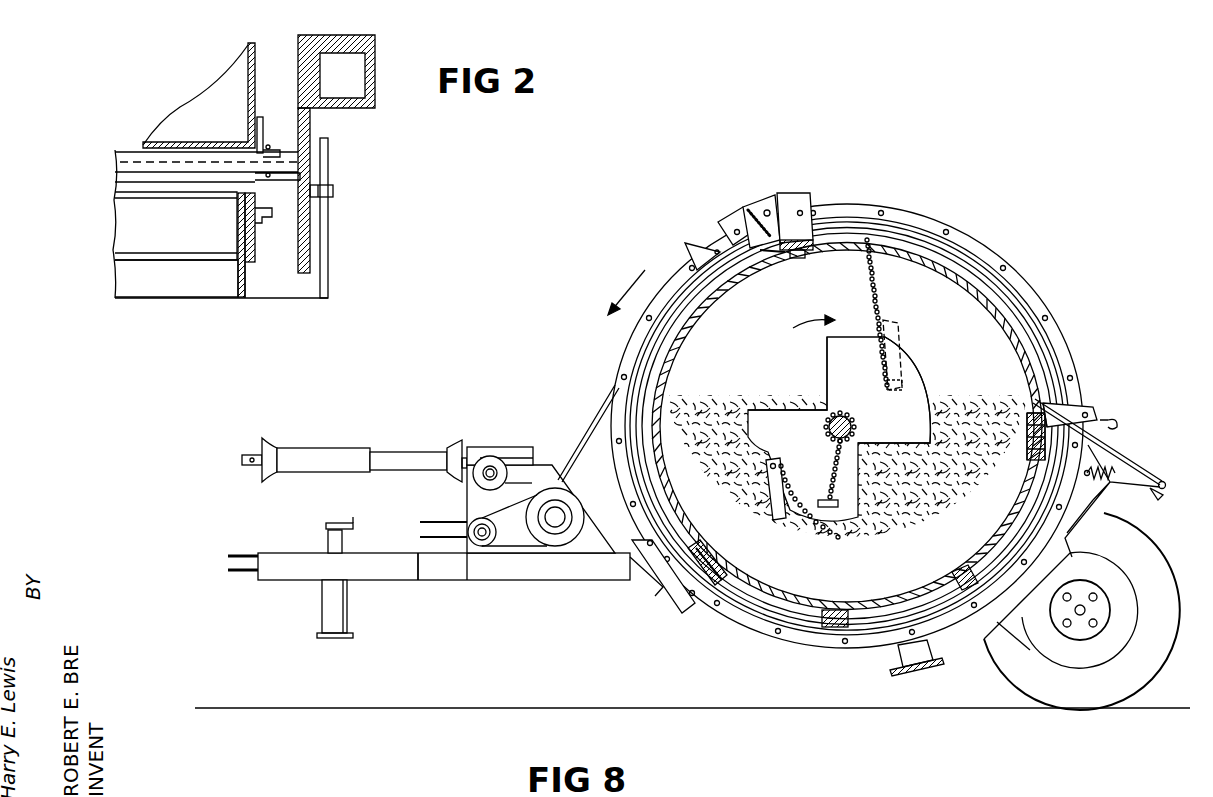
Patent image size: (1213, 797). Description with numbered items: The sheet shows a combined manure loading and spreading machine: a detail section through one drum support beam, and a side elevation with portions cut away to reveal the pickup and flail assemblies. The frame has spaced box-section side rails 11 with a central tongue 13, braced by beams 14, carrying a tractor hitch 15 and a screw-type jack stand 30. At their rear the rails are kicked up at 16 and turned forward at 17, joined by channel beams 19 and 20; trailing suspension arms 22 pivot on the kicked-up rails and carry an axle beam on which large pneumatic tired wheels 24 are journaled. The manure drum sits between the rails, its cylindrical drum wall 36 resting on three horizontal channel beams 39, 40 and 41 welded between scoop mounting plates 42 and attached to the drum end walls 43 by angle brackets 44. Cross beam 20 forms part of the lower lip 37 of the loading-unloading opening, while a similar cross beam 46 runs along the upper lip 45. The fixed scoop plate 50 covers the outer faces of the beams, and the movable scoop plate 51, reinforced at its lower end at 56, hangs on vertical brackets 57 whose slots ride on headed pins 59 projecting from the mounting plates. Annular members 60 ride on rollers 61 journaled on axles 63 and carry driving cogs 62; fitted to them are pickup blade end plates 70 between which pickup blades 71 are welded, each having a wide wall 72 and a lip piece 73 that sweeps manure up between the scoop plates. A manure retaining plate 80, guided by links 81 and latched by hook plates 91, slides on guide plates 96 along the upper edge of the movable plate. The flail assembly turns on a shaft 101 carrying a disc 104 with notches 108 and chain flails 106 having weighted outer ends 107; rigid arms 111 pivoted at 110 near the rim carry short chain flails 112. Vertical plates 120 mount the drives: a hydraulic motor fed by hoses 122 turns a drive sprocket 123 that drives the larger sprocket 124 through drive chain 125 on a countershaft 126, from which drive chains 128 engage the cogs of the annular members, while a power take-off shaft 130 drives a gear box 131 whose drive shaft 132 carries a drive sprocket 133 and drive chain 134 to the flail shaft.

In FIG. 2, the side rails 11 is at (375, 92).
In FIG. 8, the side rails 11 is at (565, 578).
In FIG. 8, the tongue 13 is at (288, 551).
In FIG. 8, the beams 14 is at (445, 582).
In FIG. 8, the tractor hitch 15 is at (230, 553).
In FIG. 8, the rearwardly kicked-up rails 16 is at (1100, 498).
In FIG. 8, the forwardly extending rails 17 is at (1098, 457).
In FIG. 8, the channel beam 19 is at (1118, 478).
In FIG. 8, the channel beam 20 is at (1027, 425).
In FIG. 8, the trailing suspension arms 22 is at (1072, 553).
In FIG. 8, the pneumatic tired wheels 24 is at (1087, 611).
In FIG. 8, the screw-type jack stand 30 is at (335, 522).
In FIG. 2, the cylindrical drum wall 36 is at (180, 107).
In FIG. 8, the cylindrical drum wall 36 is at (708, 303).
In FIG. 8, the lower lip 37 is at (1028, 411).
In FIG. 8, the horizontal channel beam 39 is at (700, 550).
In FIG. 2, the horizontal channel beam 40 is at (205, 157).
In FIG. 8, the horizontal channel beam 40 is at (833, 620).
In FIG. 8, the horizontal channel beam 41 is at (958, 578).
In FIG. 2, the scoop mounting plates 42 is at (310, 127).
In FIG. 2, the drum end walls 43 is at (257, 73).
In FIG. 8, the drum end walls 43 is at (790, 372).
In FIG. 2, the angle brackets 44 is at (263, 118).
In FIG. 8, the upper lip 45 is at (813, 248).
In FIG. 8, the cross beam 46 is at (813, 197).
In FIG. 2, the fixed scoop plate 50 is at (118, 175).
In FIG. 8, the fixed scoop plate 50 is at (1025, 488).
In FIG. 2, the movable scoop plate 51 is at (300, 290).
In FIG. 8, the movable scoop plate 51 is at (997, 622).
In FIG. 8, the reinforcing structure 56 is at (927, 673).
In FIG. 2, the vertical brackets 57 is at (328, 233).
In FIG. 8, the vertical brackets 57 is at (900, 657).
In FIG. 2, the headed pins 59 is at (333, 187).
In FIG. 2, the annular members 60 is at (258, 198).
In FIG. 8, the annular members 60 is at (860, 203).
In FIG. 8, the rollers 61 is at (793, 256).
In FIG. 2, the driving cogs 62 is at (262, 223).
In FIG. 8, the driving cogs 62 is at (700, 250).
In FIG. 8, the horizontal axle 63 is at (767, 258).
In FIG. 2, the pickup blade end plates 70 is at (238, 285).
In FIG. 8, the pickup blade end plates 70 is at (718, 222).
In FIG. 2, the pickup blade 71 is at (117, 222).
In FIG. 8, the pickup blade 71 is at (767, 207).
In FIG. 8, the wide wall 72 is at (752, 218).
In FIG. 2, the lip piece 73 is at (125, 282).
In FIG. 8, the lip piece 73 is at (763, 207).
In FIG. 8, the manure retaining plate 80 is at (1055, 387).
In FIG. 8, the links 81 is at (1080, 401).
In FIG. 8, the hook plates 91 is at (1118, 420).
In FIG. 8, the guide plates 96 is at (1155, 490).
In FIG. 8, the shaft 101 is at (852, 420).
In FIG. 8, the disc 104 is at (748, 411).
In FIG. 8, the chain flail 106 is at (855, 430).
In FIG. 8, the weighted outer end 107 is at (838, 497).
In FIG. 8, the notches 108 is at (875, 455).
In FIG. 8, the pivot 110 is at (781, 463).
In FIG. 8, the rigid arms 111 is at (880, 322).
In FIG. 8, the chain flail 112 is at (880, 297).
In FIG. 8, the vertical plates 120 is at (597, 527).
In FIG. 8, the hoses 122 is at (420, 537).
In FIG. 8, the drive sprocket 123 is at (482, 546).
In FIG. 8, the sprocket 124 is at (564, 538).
In FIG. 8, the drive chain 125 is at (522, 552).
In FIG. 8, the countershaft 126 is at (563, 508).
In FIG. 8, the drive chains 128 is at (597, 418).
In FIG. 8, the shaft 130 is at (328, 447).
In FIG. 8, the gear box 131 is at (500, 446).
In FIG. 8, the drive shaft 132 is at (485, 475).
In FIG. 8, the drive sprocket 133 is at (487, 460).
In FIG. 8, the drive chain 134 is at (520, 452).